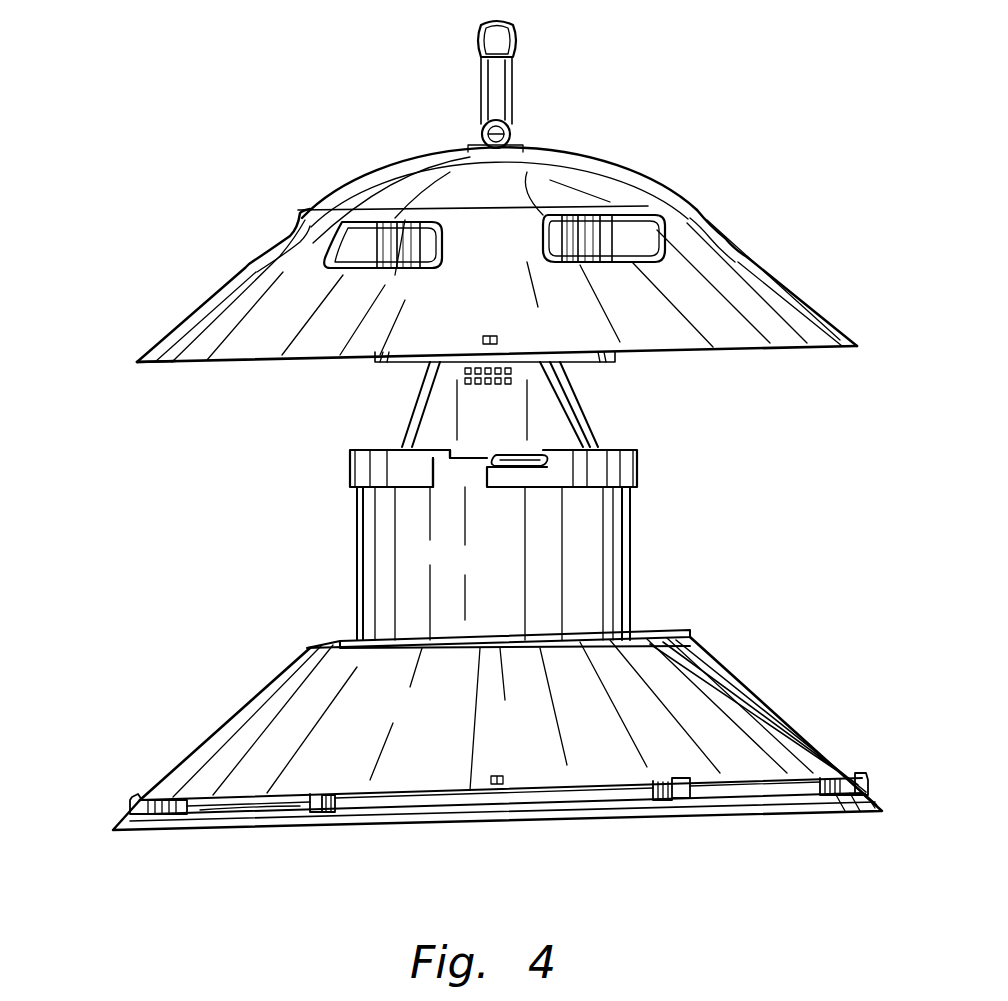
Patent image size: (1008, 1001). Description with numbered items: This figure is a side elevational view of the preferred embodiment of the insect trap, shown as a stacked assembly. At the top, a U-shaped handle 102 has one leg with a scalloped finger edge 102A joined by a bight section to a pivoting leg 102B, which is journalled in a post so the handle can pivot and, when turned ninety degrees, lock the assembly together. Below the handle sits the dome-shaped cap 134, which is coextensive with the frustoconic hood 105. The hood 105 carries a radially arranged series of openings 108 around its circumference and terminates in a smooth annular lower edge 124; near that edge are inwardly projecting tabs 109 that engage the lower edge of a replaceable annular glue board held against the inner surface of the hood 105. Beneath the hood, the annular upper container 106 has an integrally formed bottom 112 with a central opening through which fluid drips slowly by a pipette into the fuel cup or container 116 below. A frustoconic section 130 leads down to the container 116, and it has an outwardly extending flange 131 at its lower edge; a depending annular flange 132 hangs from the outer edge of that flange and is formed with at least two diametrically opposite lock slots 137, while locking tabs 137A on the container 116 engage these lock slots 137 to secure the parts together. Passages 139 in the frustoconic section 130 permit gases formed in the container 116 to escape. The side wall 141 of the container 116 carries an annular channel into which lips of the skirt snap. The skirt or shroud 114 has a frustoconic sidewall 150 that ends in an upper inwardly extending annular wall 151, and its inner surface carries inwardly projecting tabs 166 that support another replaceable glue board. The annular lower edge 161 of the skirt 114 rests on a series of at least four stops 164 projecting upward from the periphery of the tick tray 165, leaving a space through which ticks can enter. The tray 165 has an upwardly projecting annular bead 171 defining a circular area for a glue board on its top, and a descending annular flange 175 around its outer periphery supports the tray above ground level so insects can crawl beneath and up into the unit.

The handle 102 is at (468, 38).
The scalloped finger edge 102A is at (510, 40).
The pivoting leg 102B is at (500, 114).
The hood 105 is at (210, 296).
The upper container 106 is at (620, 243).
The openings 108 is at (277, 250).
The inwardly projecting tabs 109 is at (486, 337).
The bottom 112 is at (586, 364).
The skirt or shroud 114 is at (260, 683).
The fuel cup or container 116 is at (352, 563).
The smooth annular lower edge 124 is at (181, 363).
The neck 130 is at (410, 408).
The outwardly extending flange 131 is at (385, 450).
The depending annular flange 132 is at (350, 462).
The cap 134 is at (350, 188).
The lock slots 137 is at (440, 488).
The locking tabs 137A is at (535, 466).
The passages 139 is at (515, 382).
The side wall 141 is at (357, 592).
The sidewall 150 is at (222, 728).
The upper inwardly extending annular wall 151 is at (330, 642).
The annular lower edge 161 is at (188, 814).
The stops 164 is at (130, 808).
The tick tray 165 is at (572, 826).
The inwardly projecting tabs 166 is at (517, 778).
The upwardly projecting annular bead 171 is at (262, 814).
The descending annular flange 175 is at (117, 826).